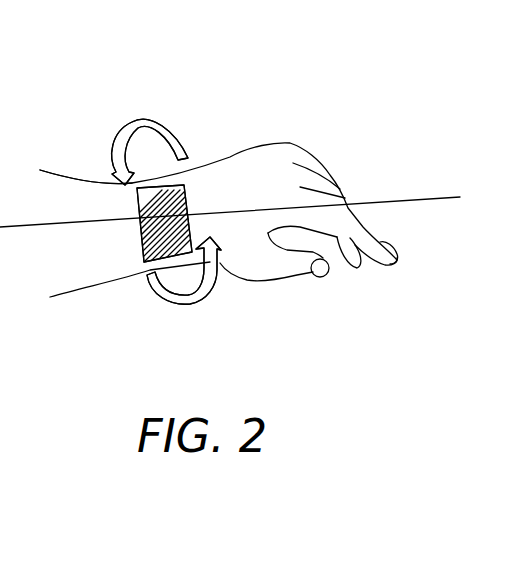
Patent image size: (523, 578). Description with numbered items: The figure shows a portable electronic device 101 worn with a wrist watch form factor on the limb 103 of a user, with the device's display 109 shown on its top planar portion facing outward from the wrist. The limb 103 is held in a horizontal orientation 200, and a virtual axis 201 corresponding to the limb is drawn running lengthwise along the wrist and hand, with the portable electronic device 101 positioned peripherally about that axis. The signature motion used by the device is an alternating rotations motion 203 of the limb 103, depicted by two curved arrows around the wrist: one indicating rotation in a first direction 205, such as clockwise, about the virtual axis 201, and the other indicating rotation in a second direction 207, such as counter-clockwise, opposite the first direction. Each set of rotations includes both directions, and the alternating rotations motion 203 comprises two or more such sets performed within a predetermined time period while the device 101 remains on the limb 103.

The portable electronic device 101 is at (213, 195).
The limb 103 is at (68, 183).
The display 109 is at (140, 245).
The horizontal orientation 200 is at (385, 347).
The virtual axis 201 is at (418, 199).
The alternating rotations motion 203 is at (137, 120).
The first direction 205 is at (137, 120).
The second direction 207 is at (173, 331).